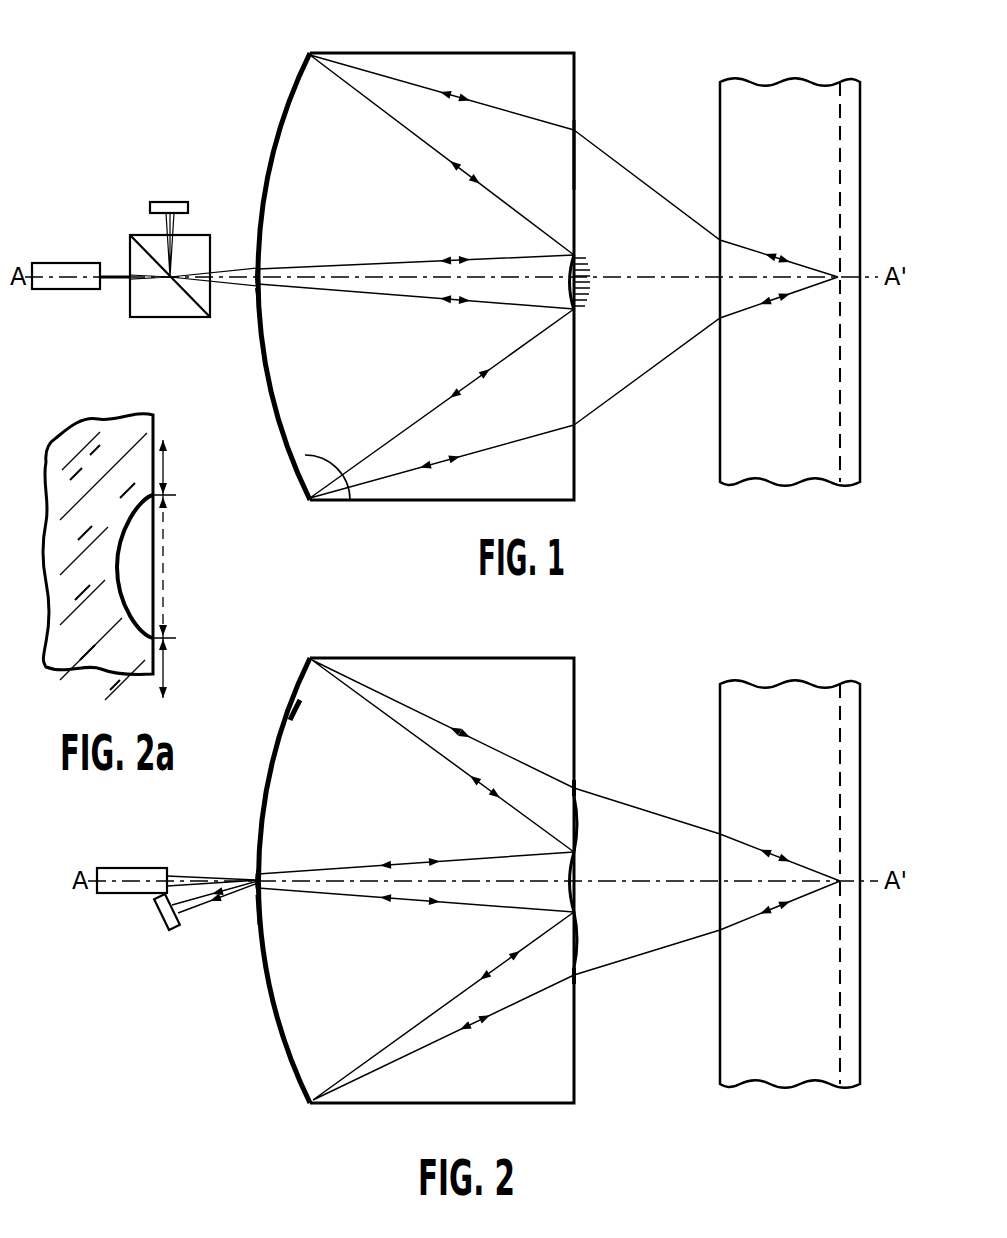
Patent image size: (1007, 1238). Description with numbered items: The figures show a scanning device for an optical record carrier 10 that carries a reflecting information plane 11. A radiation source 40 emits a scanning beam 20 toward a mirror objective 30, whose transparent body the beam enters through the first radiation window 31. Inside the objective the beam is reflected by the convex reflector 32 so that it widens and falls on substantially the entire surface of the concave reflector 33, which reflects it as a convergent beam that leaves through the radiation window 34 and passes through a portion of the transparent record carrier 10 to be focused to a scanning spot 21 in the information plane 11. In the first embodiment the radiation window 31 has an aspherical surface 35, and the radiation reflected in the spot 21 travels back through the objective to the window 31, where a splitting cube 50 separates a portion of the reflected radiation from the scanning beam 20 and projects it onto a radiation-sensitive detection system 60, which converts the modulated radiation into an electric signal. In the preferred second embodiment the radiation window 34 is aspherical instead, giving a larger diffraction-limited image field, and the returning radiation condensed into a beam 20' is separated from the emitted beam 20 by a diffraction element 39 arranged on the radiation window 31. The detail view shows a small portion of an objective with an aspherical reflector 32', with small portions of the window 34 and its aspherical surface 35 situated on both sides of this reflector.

In FIG. 1, the optical record carrier 10 is at (828, 392).
In FIG. 2, the optical record carrier 10 is at (811, 1080).
In FIG. 1, the reflecting information plane 11 is at (843, 165).
In FIG. 2, the reflecting information plane 11 is at (842, 955).
In FIG. 1, the scanning beam 20 is at (416, 295).
In FIG. 2, the scanning beam 20 is at (416, 868).
In FIG. 2, the reflected radiation beam 20' is at (317, 906).
In FIG. 1, the scanning spot 21 is at (840, 283).
In FIG. 2, the scanning spot 21 is at (837, 878).
In FIG. 1, the mirror objective 30 is at (590, 69).
In FIG. 2a, the mirror objective 30 is at (172, 592).
In FIG. 2, the mirror objective 30 is at (592, 676).
In FIG. 1, the first radiation window 31 is at (255, 262).
In FIG. 2, the first radiation window 31 is at (253, 860).
In FIG. 1, the convex reflector 32 is at (594, 297).
In FIG. 2, the convex reflector 32 is at (596, 877).
In FIG. 2a, the aspherical reflector 32' is at (173, 566).
In FIG. 1, the concave reflector 33 is at (342, 501).
In FIG. 2, the concave reflector 33 is at (285, 717).
In FIG. 1, the radiation window 34 is at (580, 176).
In FIG. 2, the radiation window 34 is at (580, 788).
In FIG. 1, the aspherical surface 35 is at (253, 296).
In FIG. 2a, the aspherical surface 35 is at (174, 462).
In FIG. 2, the aspherical surface 35 is at (582, 815).
In FIG. 2, the diffraction element 39 is at (256, 916).
In FIG. 1, the radiation source 40 is at (75, 290).
In FIG. 2, the radiation source 40 is at (120, 870).
In FIG. 1, the splitting cube 50 is at (166, 308).
In FIG. 1, the radiation-sensitive detection system 60 is at (172, 203).
In FIG. 2, the radiation-sensitive detection system 60 is at (162, 926).